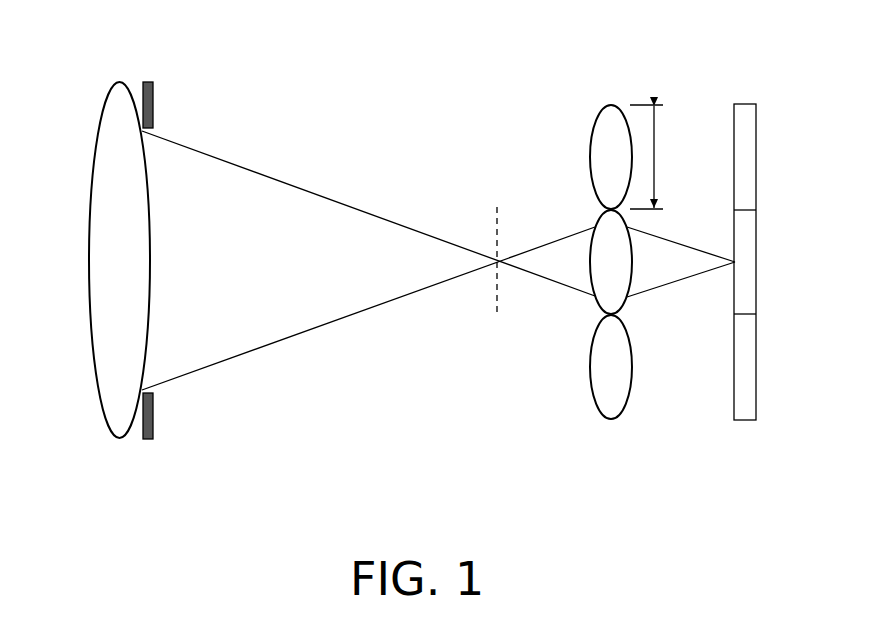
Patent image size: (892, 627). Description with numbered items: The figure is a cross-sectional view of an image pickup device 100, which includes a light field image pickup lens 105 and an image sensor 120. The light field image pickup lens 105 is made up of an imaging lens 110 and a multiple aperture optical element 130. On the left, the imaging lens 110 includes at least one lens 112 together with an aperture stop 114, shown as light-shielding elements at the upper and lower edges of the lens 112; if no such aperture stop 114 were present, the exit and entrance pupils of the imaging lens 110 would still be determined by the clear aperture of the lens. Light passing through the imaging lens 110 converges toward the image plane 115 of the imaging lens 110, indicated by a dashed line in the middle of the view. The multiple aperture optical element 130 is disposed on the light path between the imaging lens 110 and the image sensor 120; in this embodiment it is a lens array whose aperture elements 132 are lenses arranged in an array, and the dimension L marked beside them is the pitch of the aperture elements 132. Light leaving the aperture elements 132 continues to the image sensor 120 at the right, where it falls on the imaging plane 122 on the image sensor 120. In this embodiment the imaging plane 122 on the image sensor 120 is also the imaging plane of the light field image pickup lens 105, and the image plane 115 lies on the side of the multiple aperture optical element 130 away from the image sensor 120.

The image pickup device 100 is at (812, 539).
The light field image pickup lens 105 is at (638, 456).
The imaging lens 110 is at (162, 58).
The lens 112 is at (114, 123).
The aperture stop 114 is at (153, 107).
The image plane 115 is at (497, 305).
The image sensor 120 is at (748, 113).
The imaging plane 122 is at (731, 367).
The multiple aperture optical element 130 is at (614, 95).
The aperture element 132 is at (603, 130).